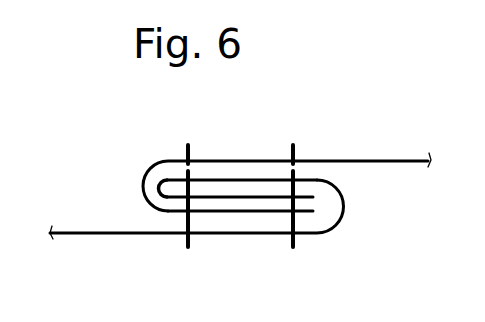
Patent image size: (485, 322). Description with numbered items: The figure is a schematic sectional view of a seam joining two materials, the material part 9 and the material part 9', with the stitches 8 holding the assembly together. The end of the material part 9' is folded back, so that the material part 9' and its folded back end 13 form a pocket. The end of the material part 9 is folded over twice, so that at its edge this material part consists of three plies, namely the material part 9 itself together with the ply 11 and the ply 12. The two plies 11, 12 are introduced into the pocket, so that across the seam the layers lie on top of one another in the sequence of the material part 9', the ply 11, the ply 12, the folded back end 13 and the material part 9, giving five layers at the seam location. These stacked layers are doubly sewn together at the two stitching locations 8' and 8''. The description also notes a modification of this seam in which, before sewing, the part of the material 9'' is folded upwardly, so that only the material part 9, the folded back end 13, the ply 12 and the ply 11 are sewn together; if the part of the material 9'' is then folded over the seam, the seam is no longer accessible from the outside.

The stitches 8 is at (245, 160).
The first stitching location 8' is at (160, 262).
The second stitching location 8'' is at (330, 264).
The material part 9 is at (195, 198).
The material part 9' is at (287, 145).
The part of the material 9'' is at (125, 150).
The ply 11 is at (227, 179).
The ply 12 is at (260, 196).
The folded back end 13 is at (243, 213).